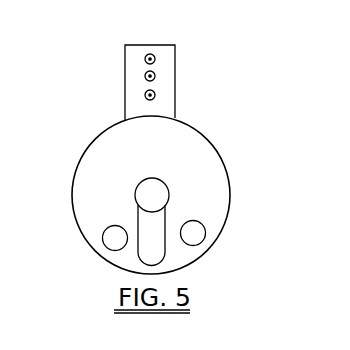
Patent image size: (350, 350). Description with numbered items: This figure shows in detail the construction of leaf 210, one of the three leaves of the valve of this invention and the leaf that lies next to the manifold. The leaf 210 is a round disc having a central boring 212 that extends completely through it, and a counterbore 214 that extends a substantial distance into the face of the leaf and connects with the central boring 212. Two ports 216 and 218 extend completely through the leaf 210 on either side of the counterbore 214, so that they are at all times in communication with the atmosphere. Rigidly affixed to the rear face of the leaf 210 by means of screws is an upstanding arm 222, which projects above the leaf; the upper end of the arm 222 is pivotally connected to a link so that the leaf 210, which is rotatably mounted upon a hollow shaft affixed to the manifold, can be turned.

The leaf 210 is at (195, 148).
The central boring 212 is at (145, 194).
The counterbore 214 is at (145, 223).
The port 216 is at (113, 238).
The port 218 is at (196, 237).
The upstanding arm 222 is at (163, 79).